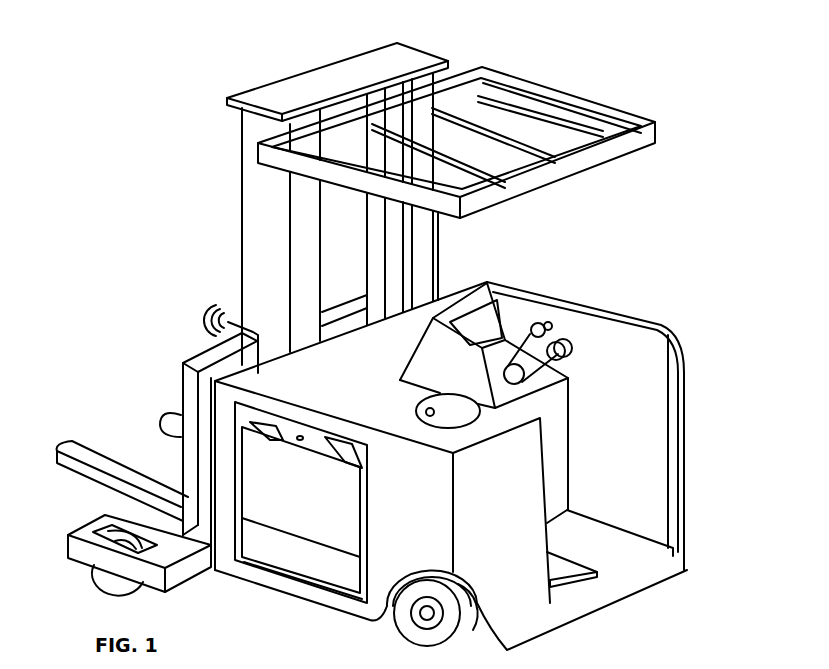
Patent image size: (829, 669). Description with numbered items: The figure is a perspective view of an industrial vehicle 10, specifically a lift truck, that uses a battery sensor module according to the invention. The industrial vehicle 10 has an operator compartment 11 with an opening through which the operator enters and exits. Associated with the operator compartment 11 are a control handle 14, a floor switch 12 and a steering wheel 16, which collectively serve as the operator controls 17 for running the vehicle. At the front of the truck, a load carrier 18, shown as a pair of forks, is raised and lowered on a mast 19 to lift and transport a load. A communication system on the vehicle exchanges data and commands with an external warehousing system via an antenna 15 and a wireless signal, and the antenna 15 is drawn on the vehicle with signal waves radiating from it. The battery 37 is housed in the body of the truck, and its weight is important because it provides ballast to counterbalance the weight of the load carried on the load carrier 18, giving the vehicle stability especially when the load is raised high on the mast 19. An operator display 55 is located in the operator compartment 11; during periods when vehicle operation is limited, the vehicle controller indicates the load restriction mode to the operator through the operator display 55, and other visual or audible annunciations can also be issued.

The industrial vehicle 10 is at (602, 66).
The operator compartment 11 is at (623, 449).
The floor switch 12 is at (590, 581).
The control handle 14 is at (552, 321).
The antenna 15 is at (211, 319).
The steering wheel 16 is at (428, 408).
The operator controls 17 is at (582, 333).
The load carrier 18 is at (170, 415).
The mast 19 is at (423, 52).
The battery 37 is at (280, 558).
The operator display 55 is at (512, 366).